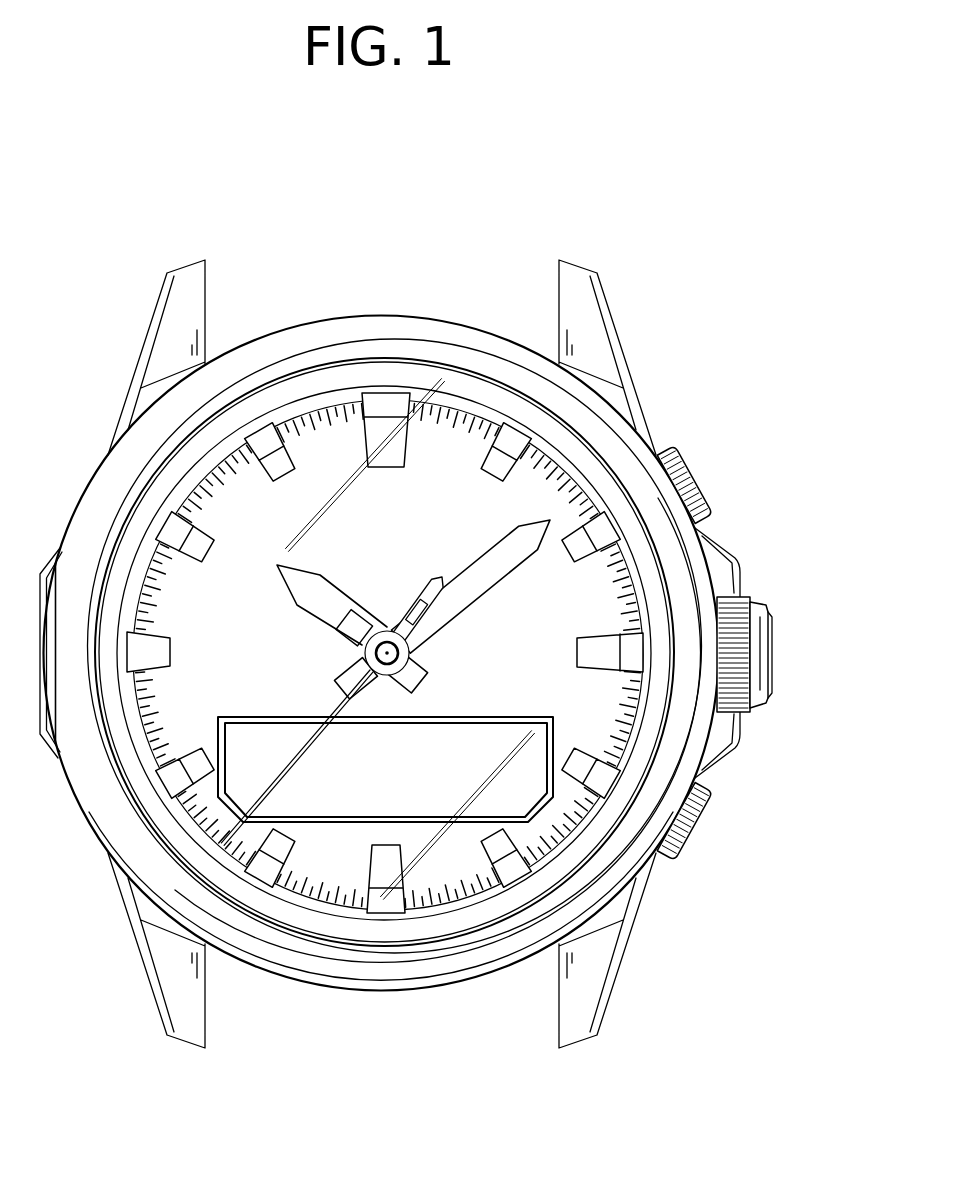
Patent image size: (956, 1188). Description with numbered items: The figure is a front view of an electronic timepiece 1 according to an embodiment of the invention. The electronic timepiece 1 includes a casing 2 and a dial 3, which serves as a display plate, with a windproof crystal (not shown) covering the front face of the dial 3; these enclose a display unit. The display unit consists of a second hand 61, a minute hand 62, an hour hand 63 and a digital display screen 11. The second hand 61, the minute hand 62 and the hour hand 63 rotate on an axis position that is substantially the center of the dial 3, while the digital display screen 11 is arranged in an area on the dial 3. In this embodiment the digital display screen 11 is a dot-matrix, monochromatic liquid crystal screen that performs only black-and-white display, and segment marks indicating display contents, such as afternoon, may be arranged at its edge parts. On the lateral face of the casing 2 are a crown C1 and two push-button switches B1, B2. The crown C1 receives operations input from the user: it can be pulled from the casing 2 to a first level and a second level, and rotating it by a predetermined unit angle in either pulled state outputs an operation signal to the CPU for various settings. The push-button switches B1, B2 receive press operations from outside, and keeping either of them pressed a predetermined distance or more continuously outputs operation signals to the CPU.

The electronic timepiece 1 is at (708, 183).
The casing 2 is at (443, 340).
The dial 3 is at (583, 627).
The digital display screen 11 is at (515, 790).
The second hand 61 is at (250, 818).
The minute hand 62 is at (552, 517).
The hour hand 63 is at (297, 583).
The push-button switch B1 is at (678, 483).
The push-button switch B2 is at (690, 818).
The crown C1 is at (760, 614).